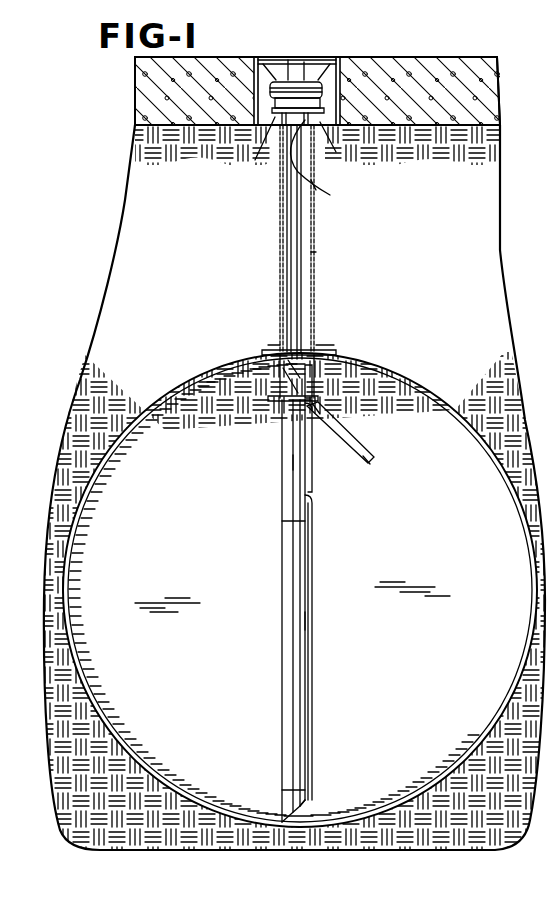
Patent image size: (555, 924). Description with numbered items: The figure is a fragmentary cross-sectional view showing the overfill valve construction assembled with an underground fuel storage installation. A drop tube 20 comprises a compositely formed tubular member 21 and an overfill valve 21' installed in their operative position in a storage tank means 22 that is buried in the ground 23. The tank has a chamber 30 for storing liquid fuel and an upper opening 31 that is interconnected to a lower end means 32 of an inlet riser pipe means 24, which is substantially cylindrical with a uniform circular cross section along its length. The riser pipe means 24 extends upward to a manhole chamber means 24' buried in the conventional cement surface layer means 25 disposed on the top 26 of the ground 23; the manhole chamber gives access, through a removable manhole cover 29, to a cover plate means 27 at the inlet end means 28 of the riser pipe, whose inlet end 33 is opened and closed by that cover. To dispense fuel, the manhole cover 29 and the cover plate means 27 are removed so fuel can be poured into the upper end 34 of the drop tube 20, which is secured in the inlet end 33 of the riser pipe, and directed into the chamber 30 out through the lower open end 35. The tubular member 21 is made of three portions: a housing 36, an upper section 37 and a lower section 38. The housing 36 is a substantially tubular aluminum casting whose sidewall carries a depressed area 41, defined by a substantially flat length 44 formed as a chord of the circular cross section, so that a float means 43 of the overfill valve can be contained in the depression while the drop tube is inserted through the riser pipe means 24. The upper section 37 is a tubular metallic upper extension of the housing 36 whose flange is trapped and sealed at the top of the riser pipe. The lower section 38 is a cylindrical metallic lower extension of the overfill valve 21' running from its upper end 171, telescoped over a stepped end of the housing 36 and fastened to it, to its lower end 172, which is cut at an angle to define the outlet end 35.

The drop tube 20 is at (305, 611).
The tubular member 21 is at (255, 611).
The overfill valve 21' is at (338, 381).
The storage tank means 22 is at (362, 353).
The ground 23 is at (103, 344).
The inlet riser pipe means 24 is at (266, 238).
The manhole chamber means 24' is at (347, 67).
The cement surface layer means 25 is at (411, 72).
The top of the ground 26 is at (470, 128).
The cover plate means 27 is at (300, 82).
The inlet end means 28 is at (275, 130).
The manhole cover 29 is at (262, 57).
The chamber 30 is at (446, 646).
The upper opening 31 is at (272, 368).
The lower end means 32 is at (277, 347).
The inlet end 33 is at (331, 157).
The upper end 34 is at (316, 190).
The lower open end 35 is at (305, 802).
The housing 36 is at (284, 464).
The upper section 37 is at (320, 256).
The lower section 38 is at (306, 622).
The depressed area 41 is at (306, 452).
The float means 43 is at (350, 442).
The flat length 44 is at (304, 490).
The upper end 171 is at (282, 521).
The lower end 172 is at (283, 792).